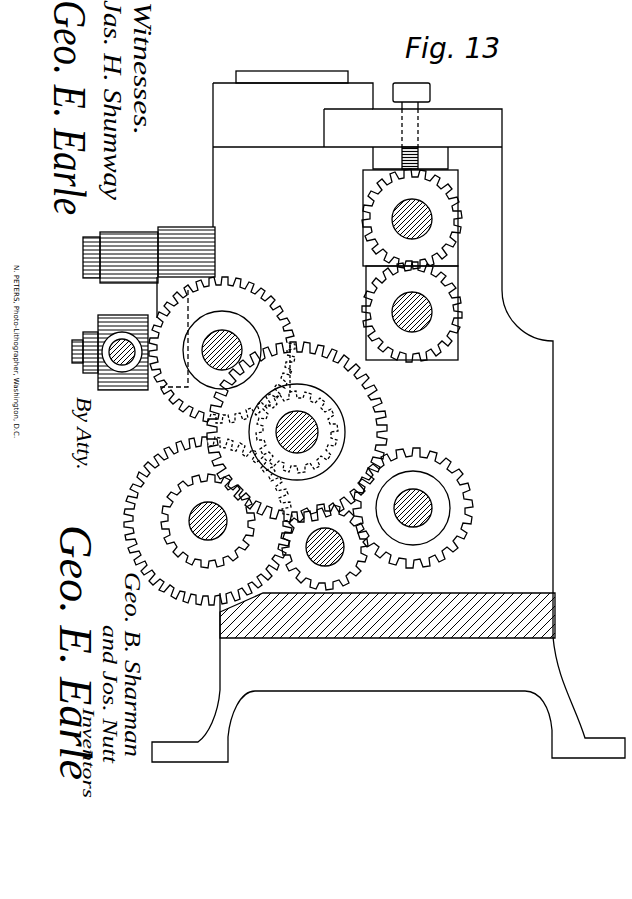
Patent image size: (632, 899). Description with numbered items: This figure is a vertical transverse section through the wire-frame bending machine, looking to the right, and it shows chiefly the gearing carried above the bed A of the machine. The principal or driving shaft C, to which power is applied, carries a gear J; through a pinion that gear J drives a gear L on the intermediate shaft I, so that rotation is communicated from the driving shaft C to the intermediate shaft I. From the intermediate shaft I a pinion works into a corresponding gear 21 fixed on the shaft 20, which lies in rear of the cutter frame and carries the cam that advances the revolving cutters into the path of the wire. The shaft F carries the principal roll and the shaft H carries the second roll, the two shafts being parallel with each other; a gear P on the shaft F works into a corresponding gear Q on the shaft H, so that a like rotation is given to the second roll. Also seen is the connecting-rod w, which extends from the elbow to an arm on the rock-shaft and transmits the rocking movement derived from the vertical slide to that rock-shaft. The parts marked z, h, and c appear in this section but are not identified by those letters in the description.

The frame/bed A is at (388, 416).
The bearing plate Q is at (419, 218).
The bearing plate P is at (420, 313).
The gear H is at (412, 219).
The gear F is at (412, 312).
The shaft z is at (120, 268).
The bearing w is at (110, 344).
The gear 20 is at (222, 350).
The gear 21 is at (297, 413).
The hidden pinion I is at (297, 408).
The hub L is at (297, 438).
The gear J is at (208, 521).
The pinion C is at (208, 521).
The pinion h is at (325, 547).
The gear c is at (413, 508).